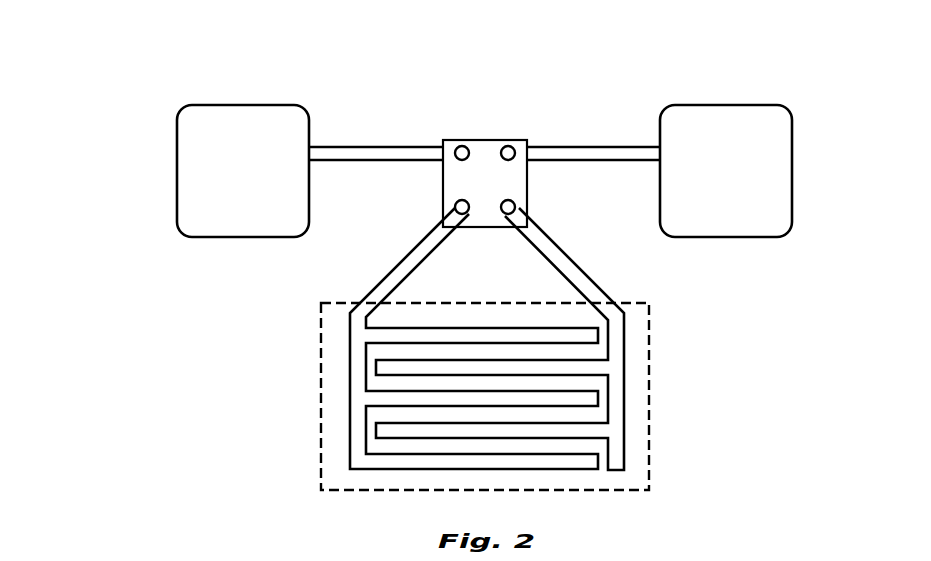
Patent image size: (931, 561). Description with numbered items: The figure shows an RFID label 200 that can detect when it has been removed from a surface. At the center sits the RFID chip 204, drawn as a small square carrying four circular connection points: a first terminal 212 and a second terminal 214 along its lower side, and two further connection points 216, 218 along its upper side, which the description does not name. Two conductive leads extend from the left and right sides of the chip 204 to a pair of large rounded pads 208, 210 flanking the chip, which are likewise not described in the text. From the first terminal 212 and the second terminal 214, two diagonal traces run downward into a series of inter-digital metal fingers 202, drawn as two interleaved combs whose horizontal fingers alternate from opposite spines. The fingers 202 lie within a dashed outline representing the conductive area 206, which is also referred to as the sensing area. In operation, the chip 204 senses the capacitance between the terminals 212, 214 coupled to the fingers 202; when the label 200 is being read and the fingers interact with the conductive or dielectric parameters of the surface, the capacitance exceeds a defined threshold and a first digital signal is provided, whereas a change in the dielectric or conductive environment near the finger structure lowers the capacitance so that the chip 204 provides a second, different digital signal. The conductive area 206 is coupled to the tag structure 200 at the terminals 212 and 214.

The label 200 is at (144, 57).
The inter-digital metal fingers 202 is at (370, 462).
The RFID chip 204 is at (483, 222).
The conductive area 206 is at (640, 460).
The left contact pad 208 is at (213, 226).
The right contact pad 210 is at (757, 227).
The first terminal 212 is at (456, 207).
The second terminal 214 is at (514, 207).
The connection via 216 is at (464, 146).
The connection via 218 is at (509, 146).